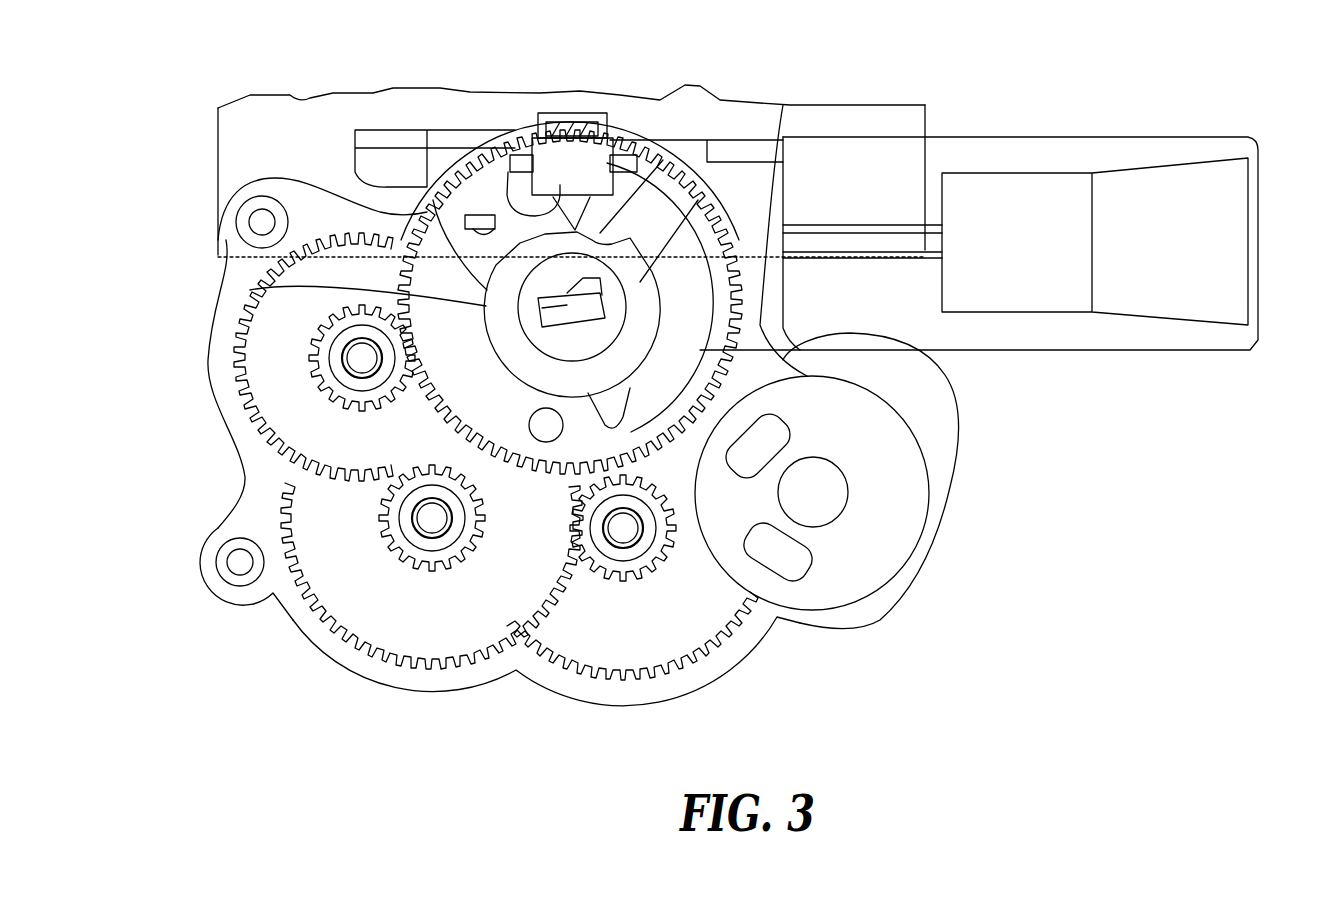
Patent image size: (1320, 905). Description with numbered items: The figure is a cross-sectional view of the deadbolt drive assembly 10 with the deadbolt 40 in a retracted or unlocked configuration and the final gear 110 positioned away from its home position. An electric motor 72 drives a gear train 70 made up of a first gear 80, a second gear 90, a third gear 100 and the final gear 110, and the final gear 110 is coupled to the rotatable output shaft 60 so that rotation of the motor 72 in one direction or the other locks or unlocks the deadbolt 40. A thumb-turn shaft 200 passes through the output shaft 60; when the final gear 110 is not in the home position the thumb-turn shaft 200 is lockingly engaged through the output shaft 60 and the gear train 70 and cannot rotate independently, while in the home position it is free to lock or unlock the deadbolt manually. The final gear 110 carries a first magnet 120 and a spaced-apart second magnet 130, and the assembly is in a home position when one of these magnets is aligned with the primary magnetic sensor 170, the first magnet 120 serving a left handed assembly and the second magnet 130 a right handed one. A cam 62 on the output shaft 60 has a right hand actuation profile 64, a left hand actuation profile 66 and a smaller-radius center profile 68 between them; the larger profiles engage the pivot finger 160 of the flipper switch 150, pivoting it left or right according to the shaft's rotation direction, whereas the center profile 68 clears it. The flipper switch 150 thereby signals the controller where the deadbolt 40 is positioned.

The deadbolt drive assembly 10 is at (1112, 470).
The deadbolt 40 is at (1078, 138).
The rotatable output shaft 60 is at (530, 330).
The cam 62 is at (706, 250).
The right hand actuation profile 64 is at (780, 112).
The left hand actuation profile 66 is at (433, 200).
The center profile 68 is at (668, 145).
The gear train 70 is at (277, 653).
The motor 72 is at (872, 530).
The first gear 80 is at (640, 618).
The second gear 90 is at (398, 610).
The third gear 100 is at (270, 383).
The final gear 110 is at (920, 350).
The first magnet 120 is at (487, 300).
The second magnet 130 is at (553, 443).
The flipper switch 150 is at (590, 186).
The pivot finger 160 is at (510, 158).
The primary magnetic sensor 170 is at (475, 214).
The thumb-turn shaft 200 is at (250, 290).